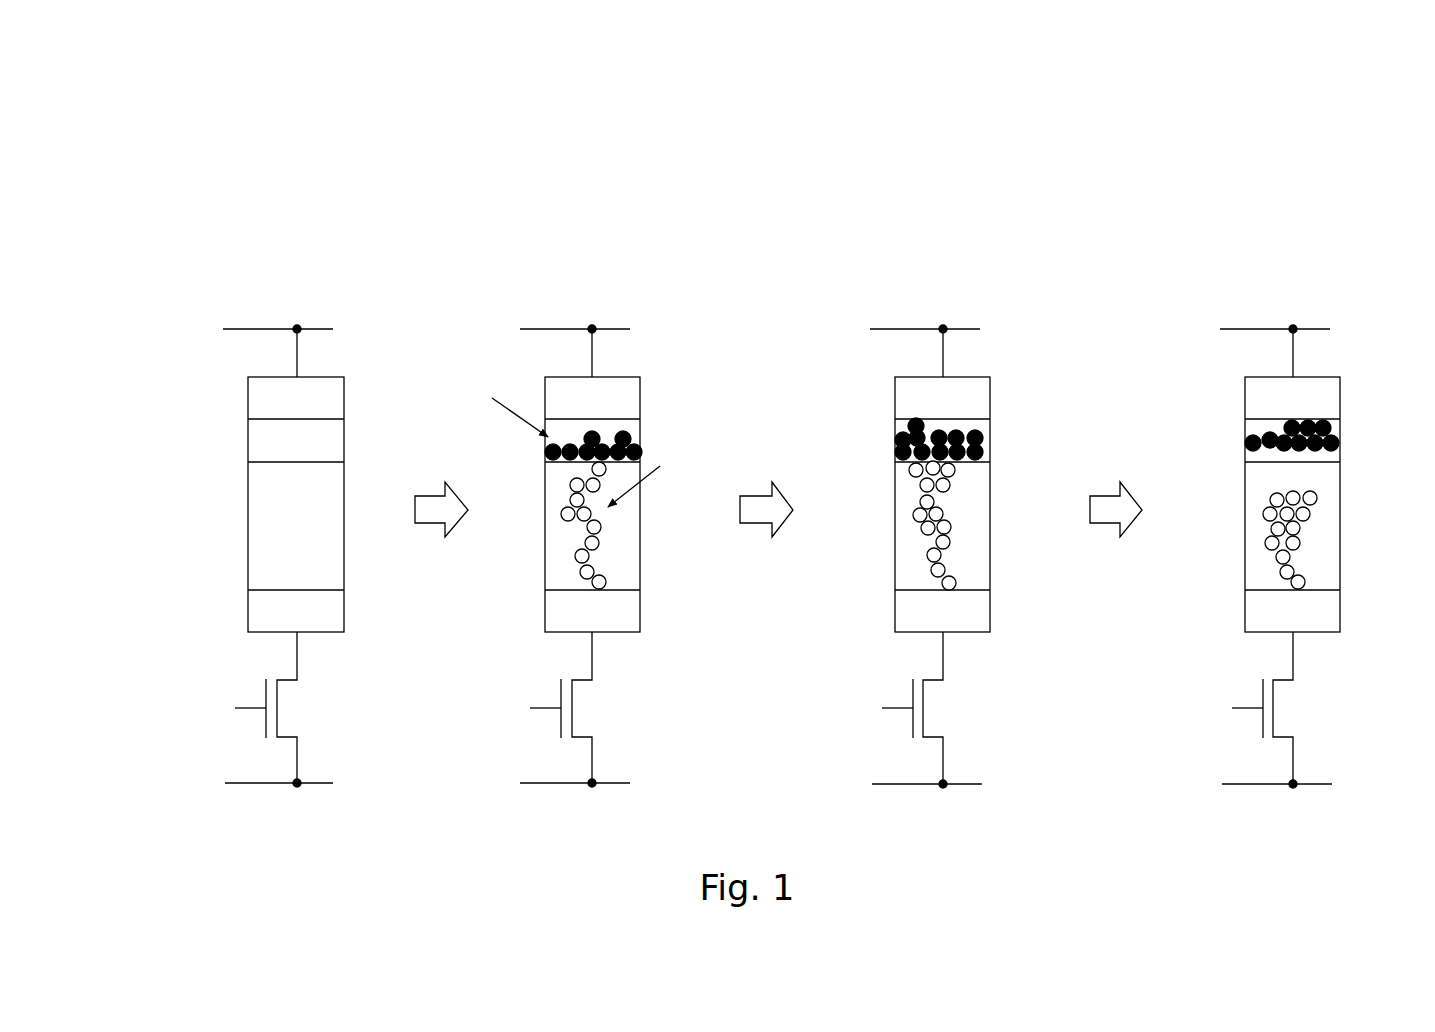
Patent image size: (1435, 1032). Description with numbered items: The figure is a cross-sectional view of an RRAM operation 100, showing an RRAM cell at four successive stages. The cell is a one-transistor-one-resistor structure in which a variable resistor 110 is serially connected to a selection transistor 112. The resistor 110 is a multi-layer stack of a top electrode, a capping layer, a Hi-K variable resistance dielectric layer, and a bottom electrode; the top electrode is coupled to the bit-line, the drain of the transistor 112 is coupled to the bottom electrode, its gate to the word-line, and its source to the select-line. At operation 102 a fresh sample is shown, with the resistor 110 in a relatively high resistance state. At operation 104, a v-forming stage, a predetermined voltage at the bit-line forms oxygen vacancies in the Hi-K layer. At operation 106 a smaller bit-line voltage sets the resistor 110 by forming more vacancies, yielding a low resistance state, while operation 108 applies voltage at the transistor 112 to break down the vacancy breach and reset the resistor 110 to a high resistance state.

The RRAM operation 100 is at (728, 63).
The fresh sample operation 102 is at (236, 206).
The v-forming operation 104 is at (534, 208).
The set operation 106 is at (884, 208).
The reset operation 108 is at (1234, 208).
The resistor 110 is at (233, 502).
The transistor 112 is at (186, 678).